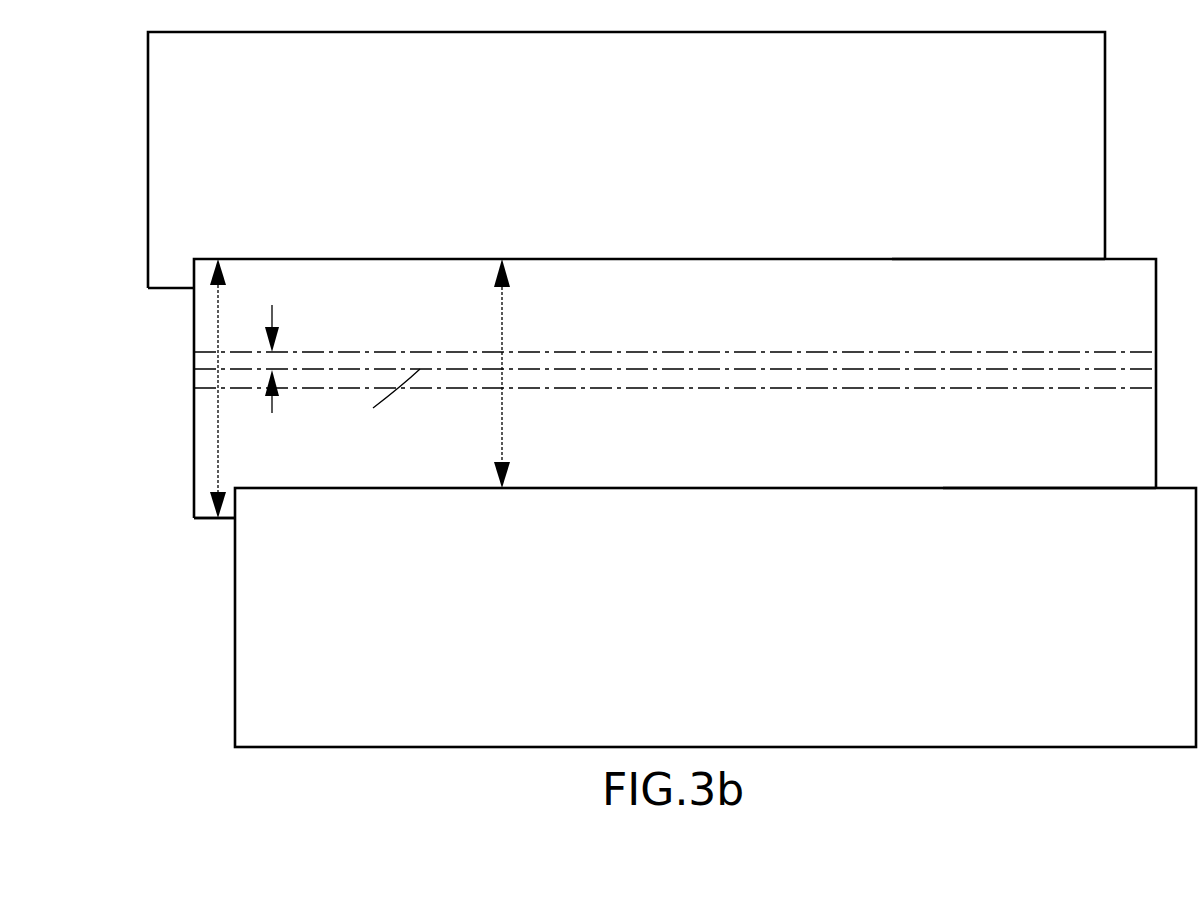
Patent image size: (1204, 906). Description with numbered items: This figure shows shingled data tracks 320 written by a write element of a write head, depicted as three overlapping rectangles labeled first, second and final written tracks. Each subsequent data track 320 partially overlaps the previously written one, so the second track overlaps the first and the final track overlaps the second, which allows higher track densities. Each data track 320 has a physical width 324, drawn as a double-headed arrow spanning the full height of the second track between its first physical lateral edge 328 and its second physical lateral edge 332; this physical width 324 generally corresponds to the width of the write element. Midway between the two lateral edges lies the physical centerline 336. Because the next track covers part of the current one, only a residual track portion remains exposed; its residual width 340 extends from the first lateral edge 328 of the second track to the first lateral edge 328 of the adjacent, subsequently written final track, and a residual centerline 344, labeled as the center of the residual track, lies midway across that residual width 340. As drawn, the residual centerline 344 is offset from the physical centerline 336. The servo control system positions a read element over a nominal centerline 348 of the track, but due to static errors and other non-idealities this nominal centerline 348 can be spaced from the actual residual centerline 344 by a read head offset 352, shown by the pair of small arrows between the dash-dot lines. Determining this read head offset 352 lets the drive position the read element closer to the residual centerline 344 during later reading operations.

The data tracks 320 is at (660, 191).
The physical width 324 is at (218, 300).
The first physical lateral edge 328 is at (892, 259).
The second physical lateral edge 332 is at (203, 518).
The physical centerline 336 is at (535, 388).
The residual width 340 is at (500, 295).
The residual centerline 344 is at (480, 370).
The nominal centerline 348 is at (350, 352).
The read head offset 352 is at (277, 338).